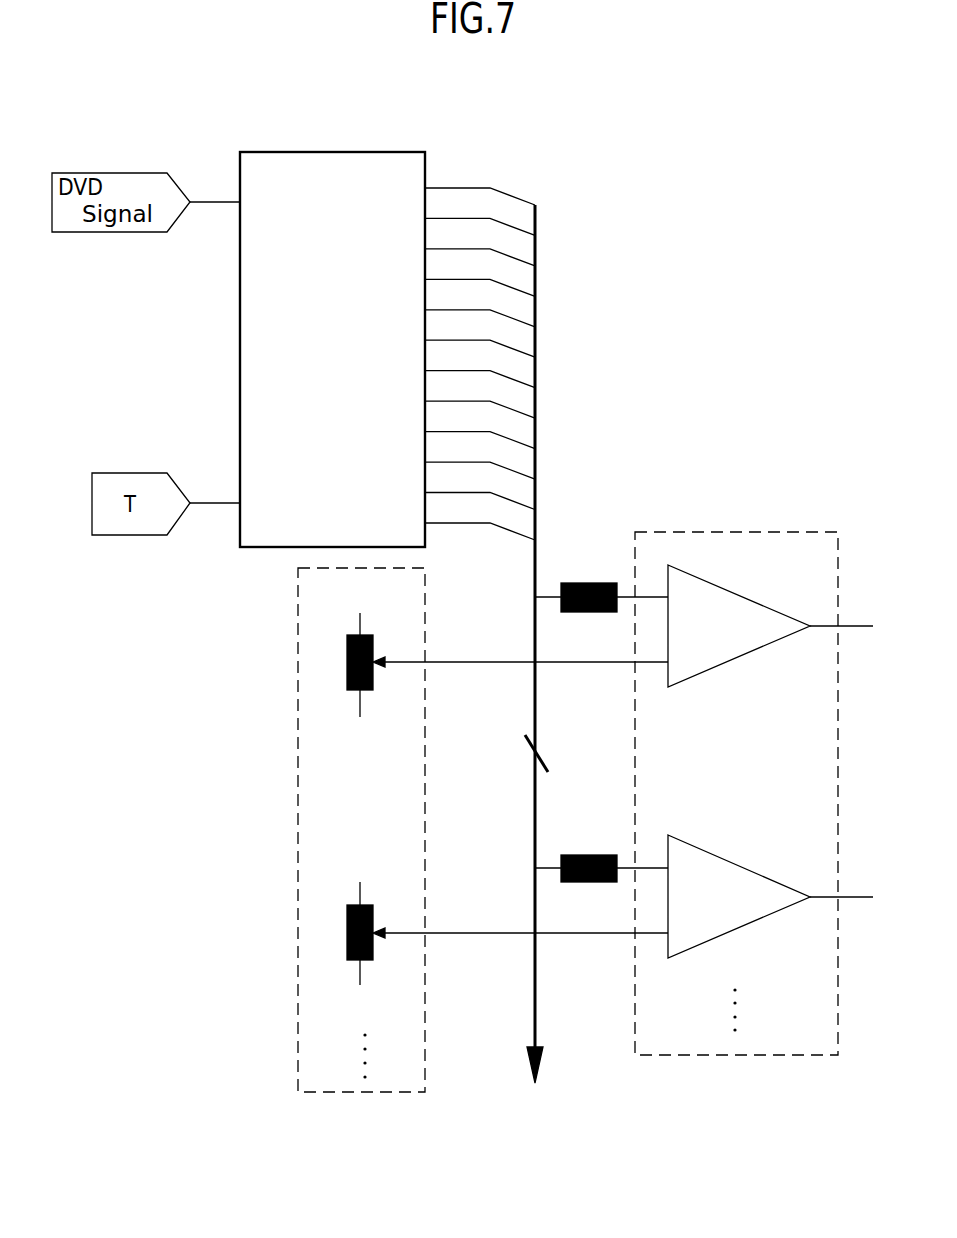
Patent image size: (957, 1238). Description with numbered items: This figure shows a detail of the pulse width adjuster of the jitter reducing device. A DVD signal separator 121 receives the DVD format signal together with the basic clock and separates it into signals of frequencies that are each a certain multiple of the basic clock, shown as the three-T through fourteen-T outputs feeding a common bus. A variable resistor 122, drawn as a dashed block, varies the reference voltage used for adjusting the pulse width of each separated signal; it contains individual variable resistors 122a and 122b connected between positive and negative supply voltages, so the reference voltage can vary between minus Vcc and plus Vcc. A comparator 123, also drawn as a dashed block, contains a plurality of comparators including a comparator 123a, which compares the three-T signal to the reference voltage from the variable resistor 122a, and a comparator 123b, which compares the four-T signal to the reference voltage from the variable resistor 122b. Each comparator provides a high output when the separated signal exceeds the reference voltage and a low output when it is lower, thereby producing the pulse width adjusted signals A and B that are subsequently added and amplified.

The DVD signal separator 121 is at (240, 371).
The variable resistor 122 is at (434, 830).
The variable resistor 122a is at (373, 683).
The variable resistor 122b is at (373, 950).
The comparator 123 is at (726, 793).
The comparator 123a is at (743, 656).
The comparator 123b is at (743, 927).